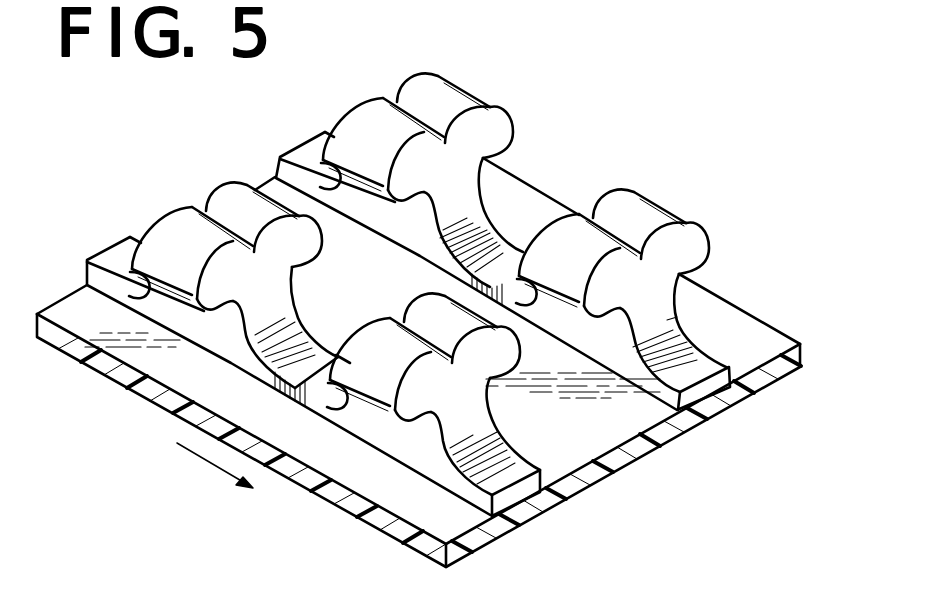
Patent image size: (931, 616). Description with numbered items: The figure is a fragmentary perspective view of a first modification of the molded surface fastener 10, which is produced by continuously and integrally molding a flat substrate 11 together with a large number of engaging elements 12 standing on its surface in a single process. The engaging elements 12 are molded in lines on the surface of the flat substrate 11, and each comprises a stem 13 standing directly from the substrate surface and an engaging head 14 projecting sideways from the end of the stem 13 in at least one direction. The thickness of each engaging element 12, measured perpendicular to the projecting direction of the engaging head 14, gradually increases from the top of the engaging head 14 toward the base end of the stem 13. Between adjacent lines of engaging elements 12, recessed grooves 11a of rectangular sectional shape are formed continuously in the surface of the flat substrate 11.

The molded surface fastener 10 is at (232, 142).
The flat substrate 11 is at (753, 335).
The recessed grooves 11a is at (593, 430).
The engaging elements 12 is at (512, 104).
The stem 13 is at (670, 318).
The engaging head 14 is at (690, 240).